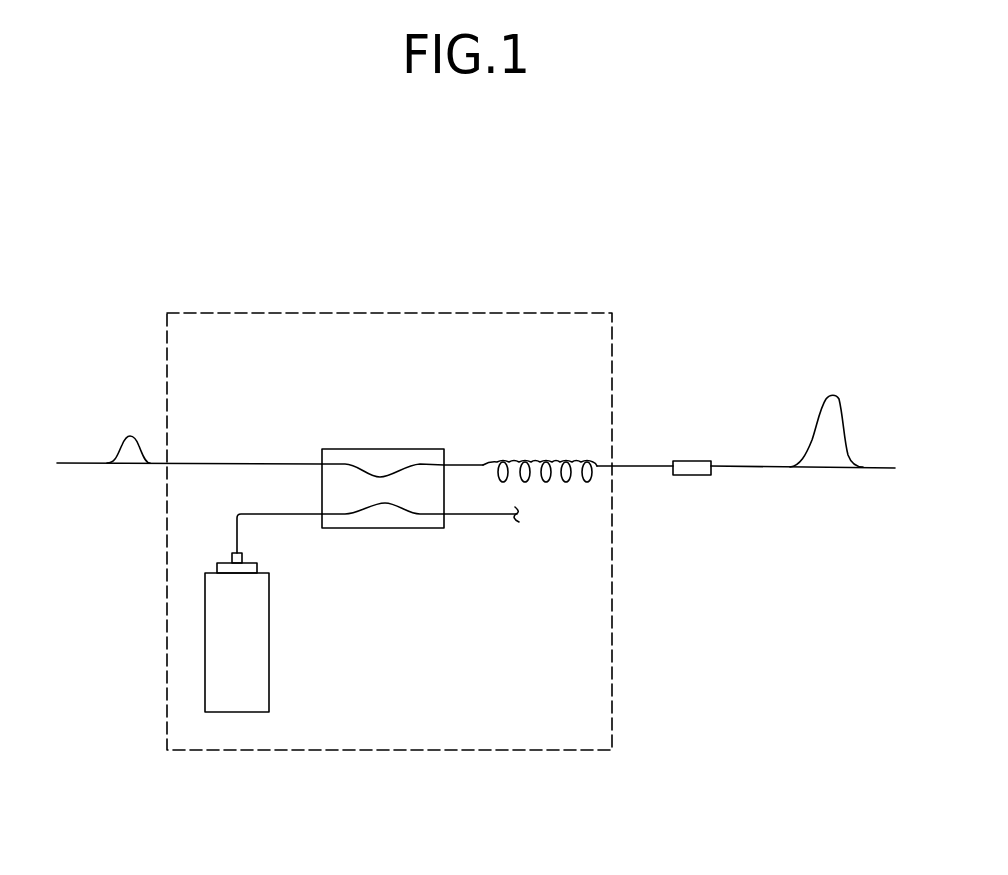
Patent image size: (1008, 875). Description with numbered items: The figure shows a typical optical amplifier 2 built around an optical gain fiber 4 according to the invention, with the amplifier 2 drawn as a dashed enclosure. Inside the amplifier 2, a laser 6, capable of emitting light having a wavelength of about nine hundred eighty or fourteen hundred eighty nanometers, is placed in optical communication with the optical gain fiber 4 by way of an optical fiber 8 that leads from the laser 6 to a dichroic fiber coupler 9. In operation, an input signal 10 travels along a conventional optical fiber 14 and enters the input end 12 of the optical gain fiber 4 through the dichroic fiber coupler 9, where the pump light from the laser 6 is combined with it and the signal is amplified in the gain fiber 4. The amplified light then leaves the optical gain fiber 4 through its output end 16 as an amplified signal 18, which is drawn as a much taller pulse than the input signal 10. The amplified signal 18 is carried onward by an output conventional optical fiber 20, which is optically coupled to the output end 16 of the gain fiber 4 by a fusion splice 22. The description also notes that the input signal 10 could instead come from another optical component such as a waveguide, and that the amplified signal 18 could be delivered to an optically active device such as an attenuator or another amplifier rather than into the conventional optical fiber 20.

The optical amplifier 2 is at (567, 266).
The optical gain fiber 4 is at (546, 465).
The laser 6 is at (257, 687).
The optical fiber 8 is at (237, 536).
The dichroic fiber coupler 9 is at (360, 449).
The input signal 10 is at (122, 441).
The input end 12 is at (470, 446).
The conventional optical fiber 14 is at (218, 463).
The output end 16 is at (662, 449).
The amplified signal 18 is at (839, 400).
The output conventional optical fiber 20 is at (781, 468).
The fusion splice 22 is at (693, 476).